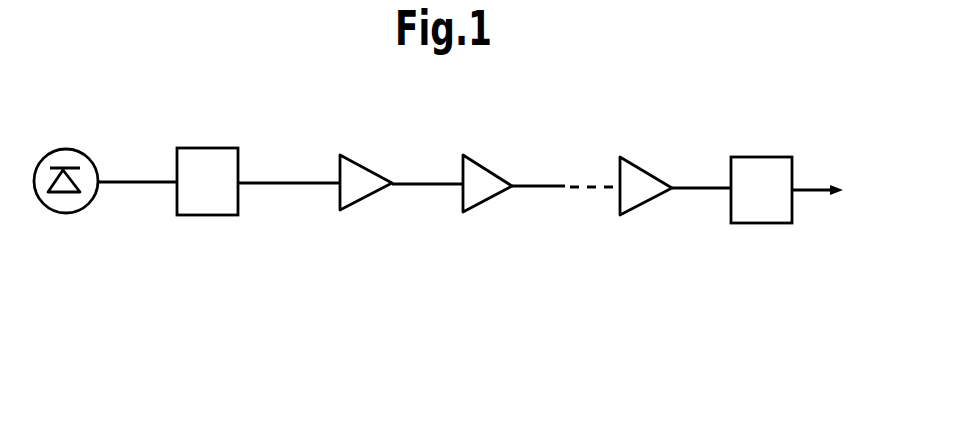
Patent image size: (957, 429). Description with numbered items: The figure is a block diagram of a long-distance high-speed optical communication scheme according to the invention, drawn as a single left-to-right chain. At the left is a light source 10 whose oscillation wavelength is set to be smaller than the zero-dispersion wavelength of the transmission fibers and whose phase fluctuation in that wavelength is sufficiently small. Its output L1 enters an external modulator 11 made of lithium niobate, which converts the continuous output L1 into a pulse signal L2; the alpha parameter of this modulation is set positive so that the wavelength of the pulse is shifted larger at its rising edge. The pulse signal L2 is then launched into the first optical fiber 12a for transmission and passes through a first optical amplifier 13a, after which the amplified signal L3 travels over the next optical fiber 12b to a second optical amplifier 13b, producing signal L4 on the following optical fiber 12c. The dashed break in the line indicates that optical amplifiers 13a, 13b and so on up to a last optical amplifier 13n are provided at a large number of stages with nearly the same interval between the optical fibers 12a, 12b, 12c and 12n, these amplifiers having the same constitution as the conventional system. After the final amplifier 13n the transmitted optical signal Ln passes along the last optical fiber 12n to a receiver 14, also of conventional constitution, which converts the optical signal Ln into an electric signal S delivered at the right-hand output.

The light source 10 is at (60, 150).
The external modulator 11 is at (204, 148).
The optical fiber 12a is at (297, 184).
The optical fiber 12b is at (427, 185).
The optical fiber 12c is at (542, 187).
The optical fiber 12n is at (698, 190).
The optical amplifier 13a is at (363, 162).
The optical amplifier 13b is at (473, 160).
The optical amplifier 13n is at (640, 168).
The receiver 14 is at (757, 157).
The output from the light source L1 is at (143, 172).
The pulse signal L2 is at (308, 175).
The optical signal L3 is at (435, 176).
The optical signal L4 is at (550, 178).
The transmitted optical signal Ln is at (710, 180).
The electric signal S is at (827, 192).